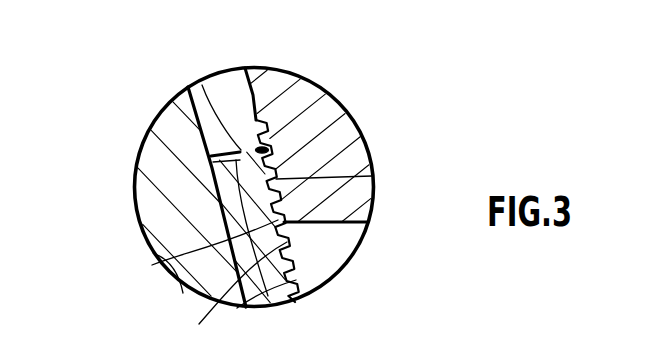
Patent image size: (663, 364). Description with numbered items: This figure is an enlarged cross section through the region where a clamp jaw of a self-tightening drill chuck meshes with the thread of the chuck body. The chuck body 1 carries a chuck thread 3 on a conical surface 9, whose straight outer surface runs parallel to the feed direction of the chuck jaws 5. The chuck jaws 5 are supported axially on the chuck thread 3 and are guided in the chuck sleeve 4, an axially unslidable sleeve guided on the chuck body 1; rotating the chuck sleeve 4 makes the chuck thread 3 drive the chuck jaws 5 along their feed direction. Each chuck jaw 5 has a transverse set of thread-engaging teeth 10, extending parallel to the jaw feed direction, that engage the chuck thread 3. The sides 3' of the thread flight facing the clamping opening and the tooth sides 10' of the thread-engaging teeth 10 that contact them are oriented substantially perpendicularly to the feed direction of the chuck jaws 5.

The chuck body 1 is at (298, 76).
The chuck thread 3 is at (354, 211).
The sides of the thread flight 3' is at (349, 154).
The chuck sleeve 4 is at (147, 170).
The chuck jaws 5 is at (232, 196).
The conical surface 9 is at (202, 85).
The thread-engaging teeth 10 is at (296, 264).
The tooth sides 10' is at (226, 296).